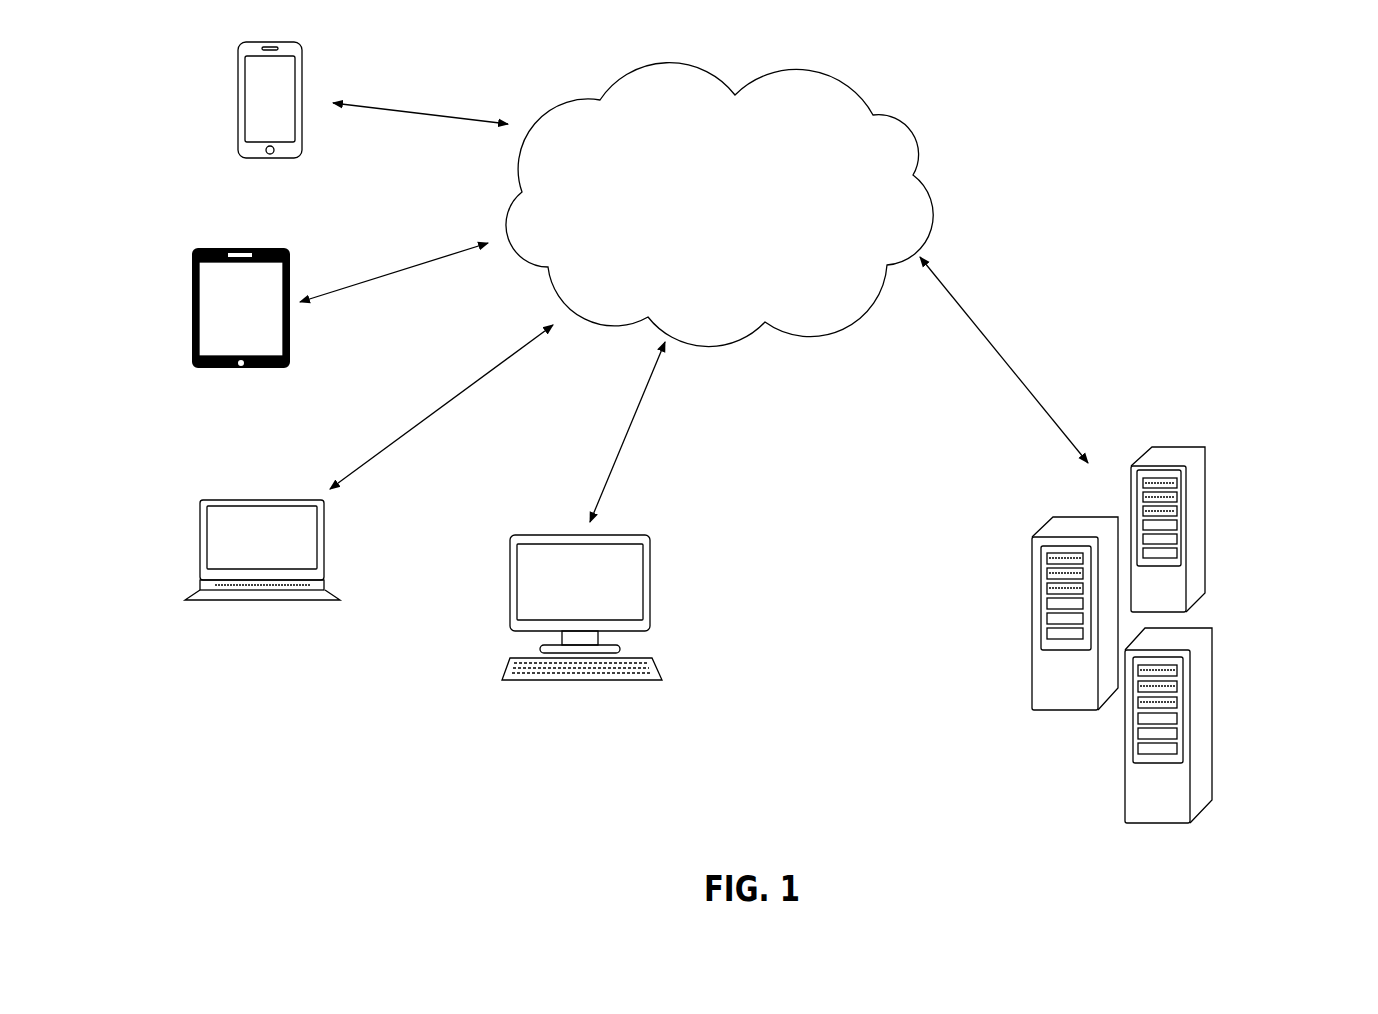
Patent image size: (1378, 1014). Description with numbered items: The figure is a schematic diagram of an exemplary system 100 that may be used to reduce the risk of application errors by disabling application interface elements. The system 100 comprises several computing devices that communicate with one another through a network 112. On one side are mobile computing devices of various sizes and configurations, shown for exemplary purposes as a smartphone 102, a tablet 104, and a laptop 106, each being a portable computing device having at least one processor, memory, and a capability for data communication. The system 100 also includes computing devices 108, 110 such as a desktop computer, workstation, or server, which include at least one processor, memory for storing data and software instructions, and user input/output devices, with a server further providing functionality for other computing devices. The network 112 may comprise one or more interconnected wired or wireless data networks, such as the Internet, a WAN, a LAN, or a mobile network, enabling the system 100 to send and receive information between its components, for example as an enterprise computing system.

The system 100 is at (1353, 53).
The smartphone 102 is at (301, 93).
The tablet 104 is at (192, 300).
The laptop 106 is at (200, 545).
The computing device 108 is at (652, 585).
The computing device 110 is at (1212, 705).
The network 112 is at (917, 143).